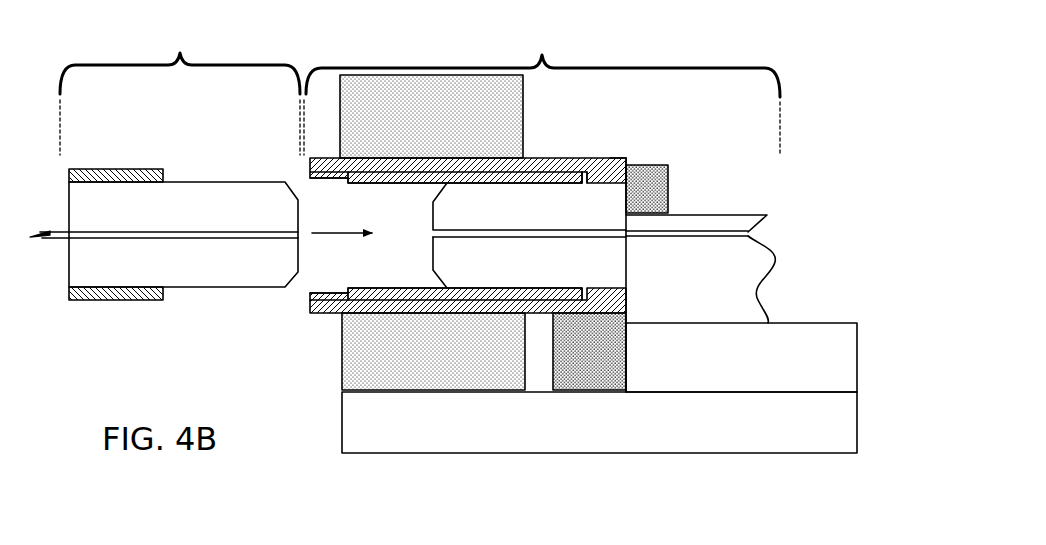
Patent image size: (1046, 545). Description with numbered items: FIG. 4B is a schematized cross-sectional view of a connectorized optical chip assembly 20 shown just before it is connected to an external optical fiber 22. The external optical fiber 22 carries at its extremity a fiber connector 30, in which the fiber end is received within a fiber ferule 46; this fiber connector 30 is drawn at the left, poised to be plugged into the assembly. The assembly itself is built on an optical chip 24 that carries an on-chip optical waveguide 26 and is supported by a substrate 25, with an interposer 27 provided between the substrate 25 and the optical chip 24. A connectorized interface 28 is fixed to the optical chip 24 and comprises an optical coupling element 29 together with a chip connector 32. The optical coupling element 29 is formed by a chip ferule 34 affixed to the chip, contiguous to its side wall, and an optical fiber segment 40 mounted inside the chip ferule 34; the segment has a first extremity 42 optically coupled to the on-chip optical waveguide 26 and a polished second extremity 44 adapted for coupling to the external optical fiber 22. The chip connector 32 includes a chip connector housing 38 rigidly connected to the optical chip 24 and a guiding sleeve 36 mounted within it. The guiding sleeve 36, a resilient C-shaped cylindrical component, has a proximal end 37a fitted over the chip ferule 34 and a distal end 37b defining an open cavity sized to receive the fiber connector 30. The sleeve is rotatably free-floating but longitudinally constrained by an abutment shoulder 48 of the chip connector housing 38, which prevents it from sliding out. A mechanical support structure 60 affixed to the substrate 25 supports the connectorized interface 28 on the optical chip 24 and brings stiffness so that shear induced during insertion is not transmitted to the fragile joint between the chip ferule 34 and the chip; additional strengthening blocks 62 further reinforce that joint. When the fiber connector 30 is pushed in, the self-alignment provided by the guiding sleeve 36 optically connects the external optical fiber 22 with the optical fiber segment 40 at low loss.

The connectorized optical chip assembly 20 is at (543, 92).
The external optical fiber 22 is at (65, 237).
The optical chip 24 is at (753, 272).
The substrate 25 is at (840, 423).
The on-chip optical waveguide 26 is at (727, 235).
The interposer 27 is at (832, 357).
The connectorized interface 28 is at (637, 307).
The optical coupling element 29 is at (614, 165).
The fiber connector 30 is at (182, 92).
The chip connector 32 is at (601, 142).
The chip ferule 34 is at (447, 270).
The guiding sleeve 36 is at (417, 184).
The proximal end 37a is at (576, 177).
The distal end 37b is at (353, 178).
The chip connector housing 38 is at (377, 305).
The optical fiber segment 40 is at (546, 210).
The first extremity 42 is at (627, 229).
The second extremity 44 is at (432, 236).
The fiber ferule 46 is at (237, 200).
The abutment shoulder 48 is at (322, 303).
The mechanical support structure 60 is at (362, 370).
The strengthening blocks 62 is at (653, 175).